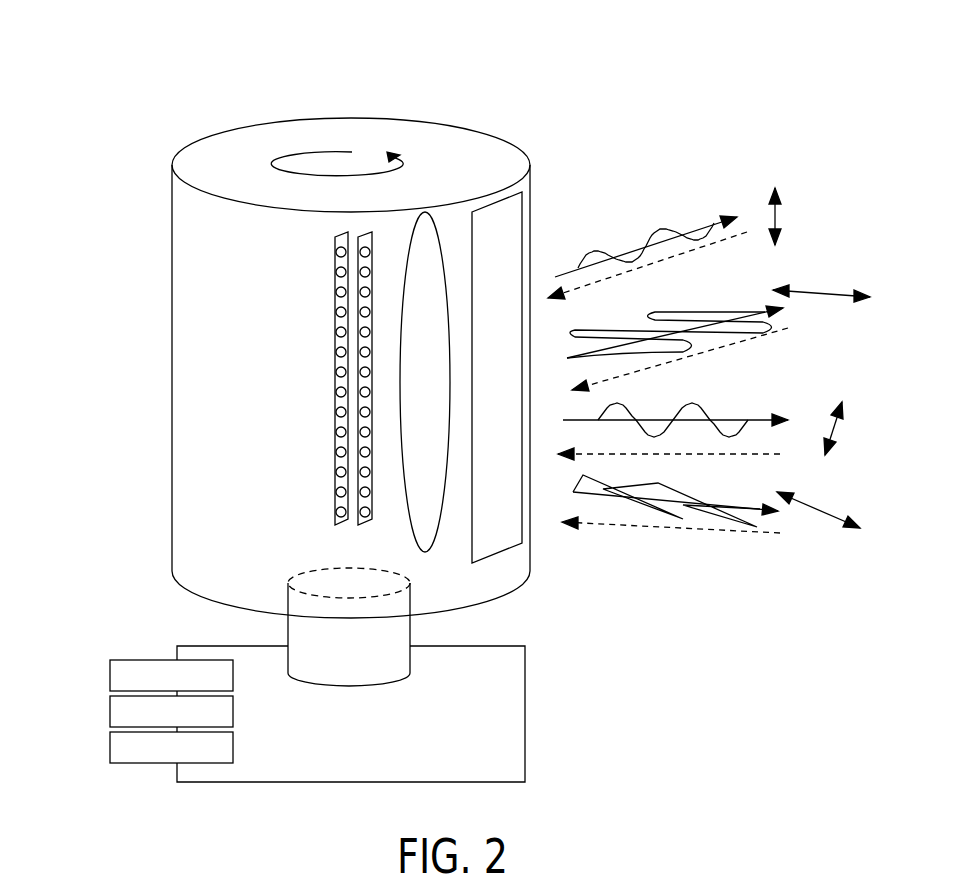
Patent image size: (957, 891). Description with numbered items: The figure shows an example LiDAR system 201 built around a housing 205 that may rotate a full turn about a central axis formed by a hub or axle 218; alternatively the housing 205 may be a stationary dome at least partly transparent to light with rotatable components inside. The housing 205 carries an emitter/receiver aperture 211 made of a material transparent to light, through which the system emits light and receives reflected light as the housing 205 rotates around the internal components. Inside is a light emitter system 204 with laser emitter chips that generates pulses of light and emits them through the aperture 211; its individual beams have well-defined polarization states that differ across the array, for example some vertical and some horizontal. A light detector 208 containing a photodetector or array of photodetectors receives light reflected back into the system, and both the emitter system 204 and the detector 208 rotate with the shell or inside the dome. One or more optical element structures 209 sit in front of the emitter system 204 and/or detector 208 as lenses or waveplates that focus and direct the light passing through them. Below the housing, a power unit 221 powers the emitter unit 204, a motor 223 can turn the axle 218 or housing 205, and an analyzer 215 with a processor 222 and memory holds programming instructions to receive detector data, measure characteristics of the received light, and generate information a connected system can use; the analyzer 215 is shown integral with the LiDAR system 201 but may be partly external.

The LiDAR system 201 is at (245, 74).
The light emitter system 204 is at (362, 240).
The housing 205 is at (172, 217).
The light detector 208 is at (335, 245).
The optical element structure 209 is at (433, 215).
The emitter/receiver aperture 211 is at (505, 197).
The analyzer 215 is at (525, 712).
The hub or axle 218 is at (357, 670).
The power unit 221 is at (122, 675).
The processor 222 is at (122, 711).
The motor 223 is at (122, 747).